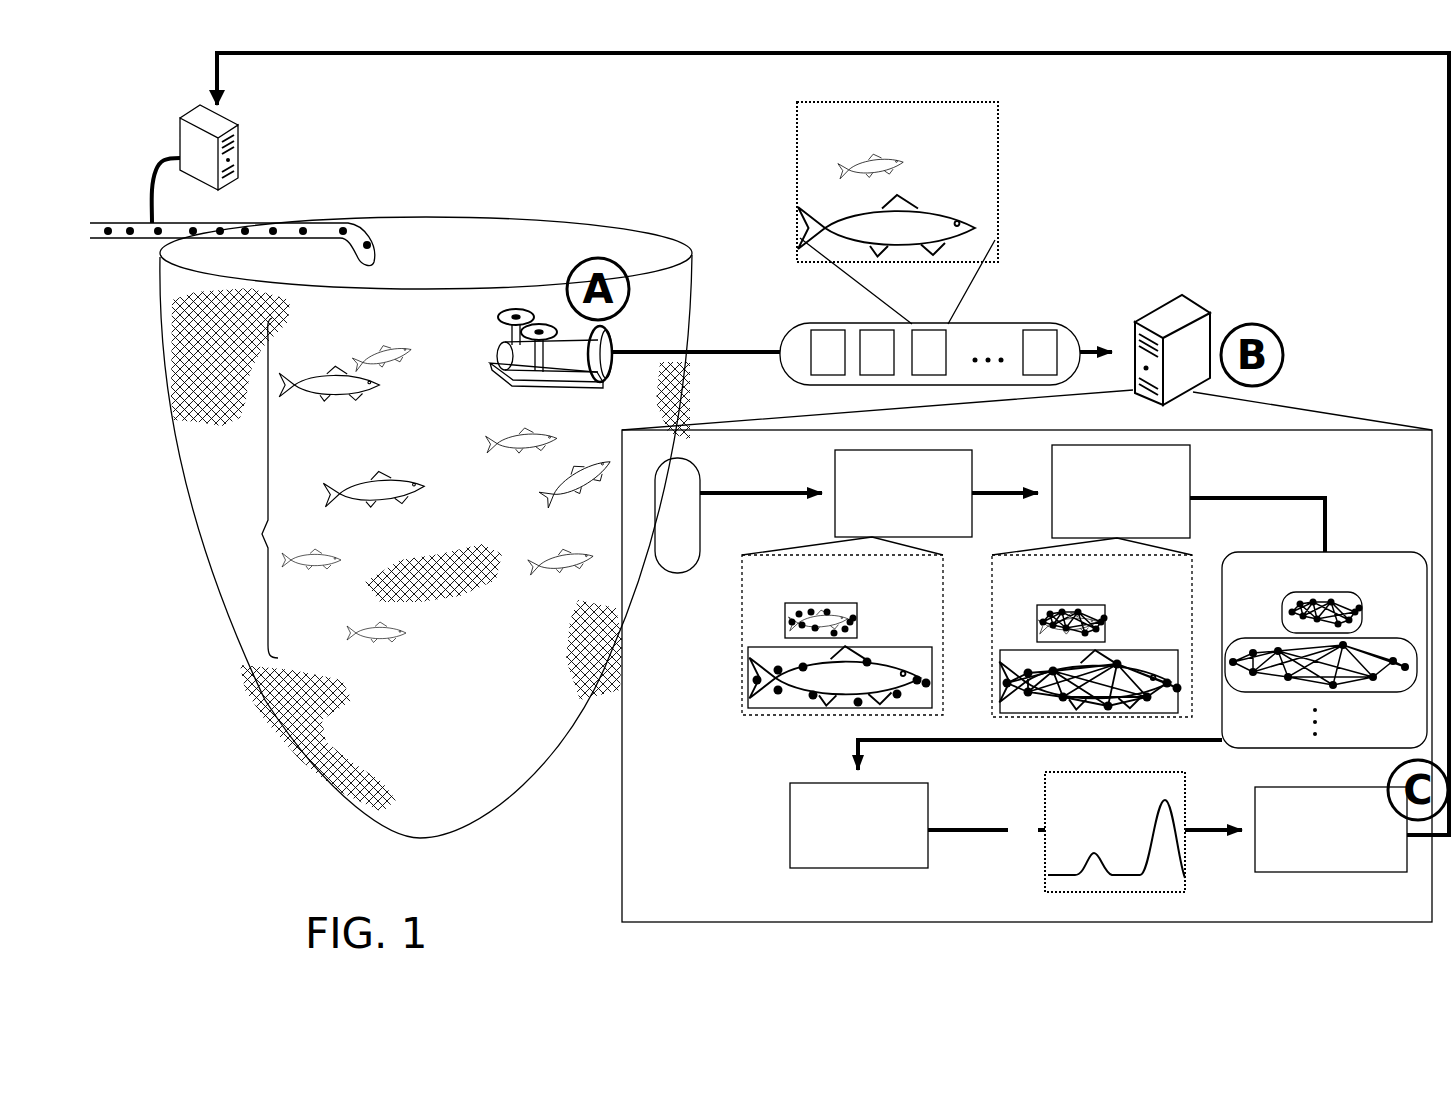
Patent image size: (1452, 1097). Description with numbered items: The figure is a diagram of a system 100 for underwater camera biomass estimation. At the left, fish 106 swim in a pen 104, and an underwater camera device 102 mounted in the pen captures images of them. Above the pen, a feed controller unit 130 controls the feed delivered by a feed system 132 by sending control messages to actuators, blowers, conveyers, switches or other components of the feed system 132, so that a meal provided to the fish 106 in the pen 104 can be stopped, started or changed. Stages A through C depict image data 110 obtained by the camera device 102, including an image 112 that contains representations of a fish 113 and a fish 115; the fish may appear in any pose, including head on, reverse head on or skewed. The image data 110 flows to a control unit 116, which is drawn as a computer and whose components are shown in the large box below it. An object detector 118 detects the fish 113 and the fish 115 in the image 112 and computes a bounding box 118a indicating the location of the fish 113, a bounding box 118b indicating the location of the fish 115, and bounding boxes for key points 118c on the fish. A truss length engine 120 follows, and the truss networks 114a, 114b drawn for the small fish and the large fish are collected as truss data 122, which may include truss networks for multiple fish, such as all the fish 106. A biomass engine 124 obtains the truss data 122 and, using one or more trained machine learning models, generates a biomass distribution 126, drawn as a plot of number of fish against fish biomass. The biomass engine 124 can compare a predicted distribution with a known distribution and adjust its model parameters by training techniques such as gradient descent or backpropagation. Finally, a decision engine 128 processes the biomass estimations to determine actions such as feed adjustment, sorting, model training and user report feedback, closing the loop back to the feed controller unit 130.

The system 100 is at (226, 815).
The underwater camera device 102 is at (503, 306).
The pen 104 is at (160, 355).
The fish 106 is at (419, 488).
The image data 110 is at (1076, 326).
The image 112 is at (961, 102).
The fish 113 is at (895, 162).
The fish 115 is at (930, 214).
The truss network of small fish 114a is at (1050, 607).
The truss network of large fish 114b is at (1031, 665).
The control unit 116 is at (1204, 308).
The object detector 118 is at (973, 473).
The bounding box 118a is at (806, 603).
The bounding box 118b is at (748, 666).
The key points 118c is at (867, 660).
The truss length engine 120 is at (1191, 471).
The truss data 122 is at (1343, 582).
The biomass engine 124 is at (925, 795).
The biomass distribution 126 is at (1188, 803).
The decision engine 128 is at (1333, 865).
The feed controller unit 130 is at (238, 133).
The feed system 132 is at (212, 222).